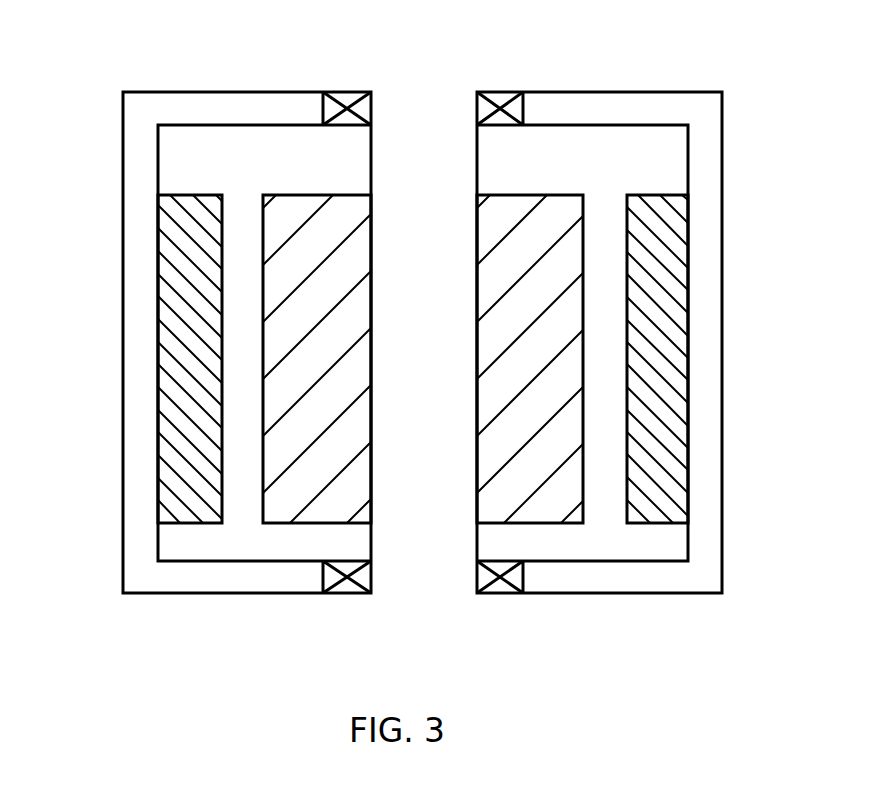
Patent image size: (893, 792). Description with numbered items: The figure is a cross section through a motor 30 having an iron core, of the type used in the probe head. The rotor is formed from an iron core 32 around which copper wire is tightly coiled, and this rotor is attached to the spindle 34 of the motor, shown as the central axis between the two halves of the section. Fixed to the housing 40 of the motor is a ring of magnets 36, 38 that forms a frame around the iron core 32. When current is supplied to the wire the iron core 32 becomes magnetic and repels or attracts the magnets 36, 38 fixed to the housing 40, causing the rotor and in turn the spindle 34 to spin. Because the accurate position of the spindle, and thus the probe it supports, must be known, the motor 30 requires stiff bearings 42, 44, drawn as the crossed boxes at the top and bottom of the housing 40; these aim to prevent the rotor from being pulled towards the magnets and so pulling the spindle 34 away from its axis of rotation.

The motor 30 is at (93, 68).
The iron core 32 is at (520, 207).
The spindle 34 is at (442, 113).
The magnet 36 is at (672, 240).
The magnet 38 is at (170, 227).
The housing 40 is at (722, 340).
The stiff bearing 42 is at (343, 97).
The stiff bearing 44 is at (495, 590).